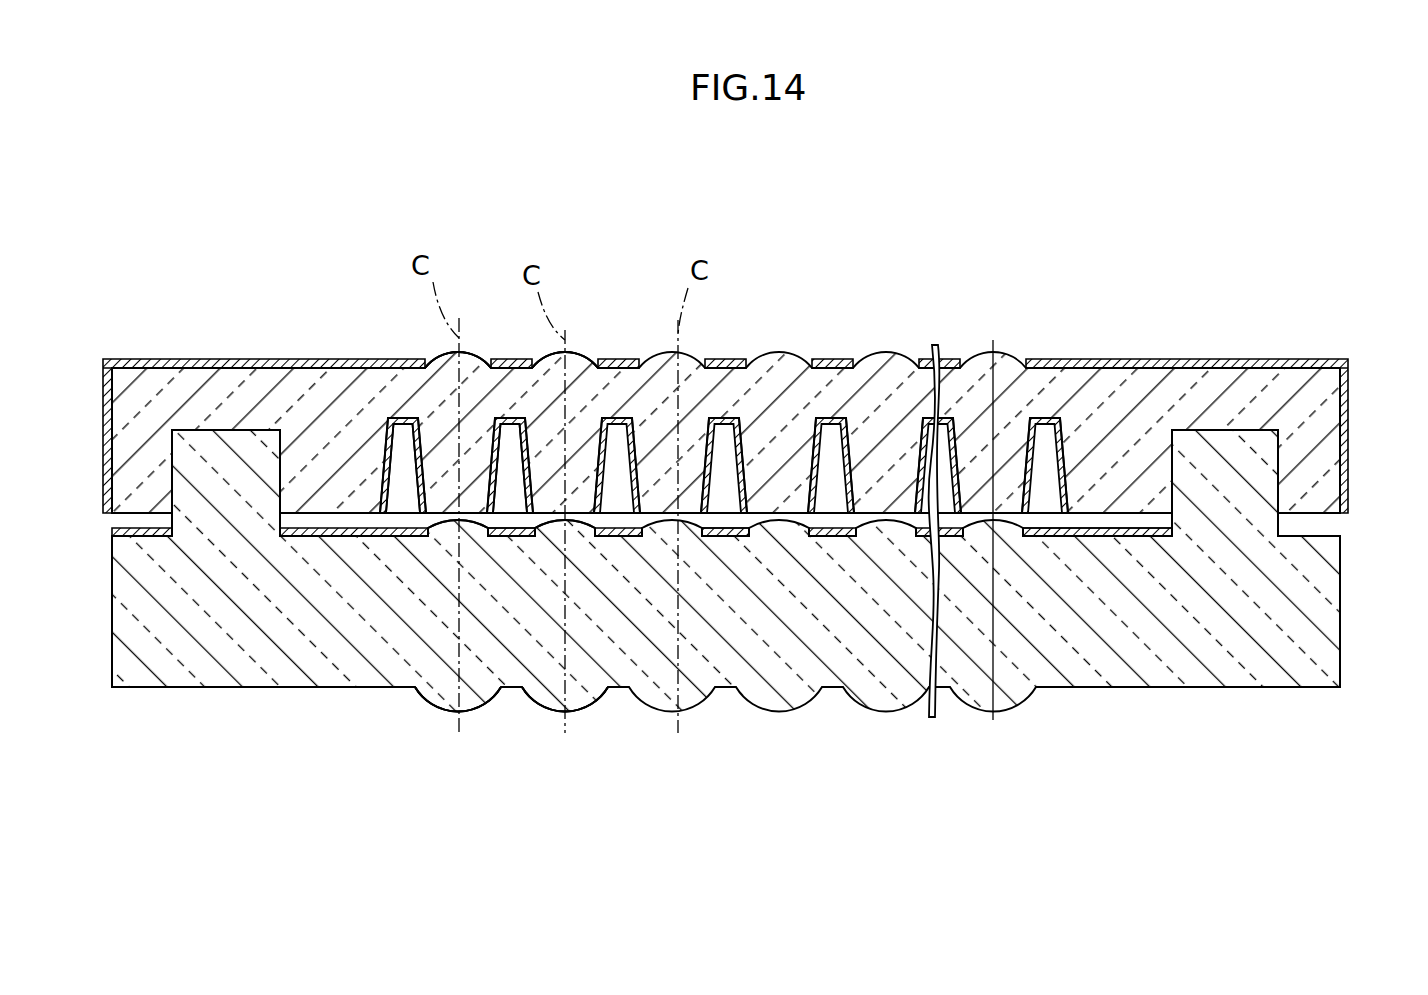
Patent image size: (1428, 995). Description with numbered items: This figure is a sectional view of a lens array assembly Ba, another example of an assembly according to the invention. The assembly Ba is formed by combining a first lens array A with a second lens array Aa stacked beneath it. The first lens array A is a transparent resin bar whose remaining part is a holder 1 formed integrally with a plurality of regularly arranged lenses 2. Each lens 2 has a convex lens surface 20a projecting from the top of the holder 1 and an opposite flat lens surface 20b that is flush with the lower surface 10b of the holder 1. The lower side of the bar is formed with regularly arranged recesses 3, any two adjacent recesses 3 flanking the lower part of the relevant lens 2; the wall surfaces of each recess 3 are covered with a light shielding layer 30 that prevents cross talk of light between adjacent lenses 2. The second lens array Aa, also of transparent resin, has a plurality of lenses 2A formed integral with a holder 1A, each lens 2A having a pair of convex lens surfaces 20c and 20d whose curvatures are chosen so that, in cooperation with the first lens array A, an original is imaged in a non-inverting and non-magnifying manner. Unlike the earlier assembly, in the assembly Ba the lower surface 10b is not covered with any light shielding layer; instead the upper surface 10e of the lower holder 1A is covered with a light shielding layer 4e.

The holder 1 is at (1128, 385).
The lens 2 is at (442, 358).
The recess 3 is at (387, 462).
The light shielding layer 30 is at (395, 419).
The lower surface 10b is at (352, 512).
The convex lens surface 20a is at (467, 358).
The flat lens surface 20b is at (427, 523).
The upper surface 10e is at (356, 536).
The convex lens surface 20c is at (448, 530).
The light shielding layer 4e is at (510, 537).
The holder 1A is at (1097, 662).
The lens 2A is at (433, 670).
The convex lens surface 20d is at (470, 711).
The lens array A is at (1330, 360).
The lens array Aa is at (1343, 579).
The lens array assembly Ba is at (1224, 250).